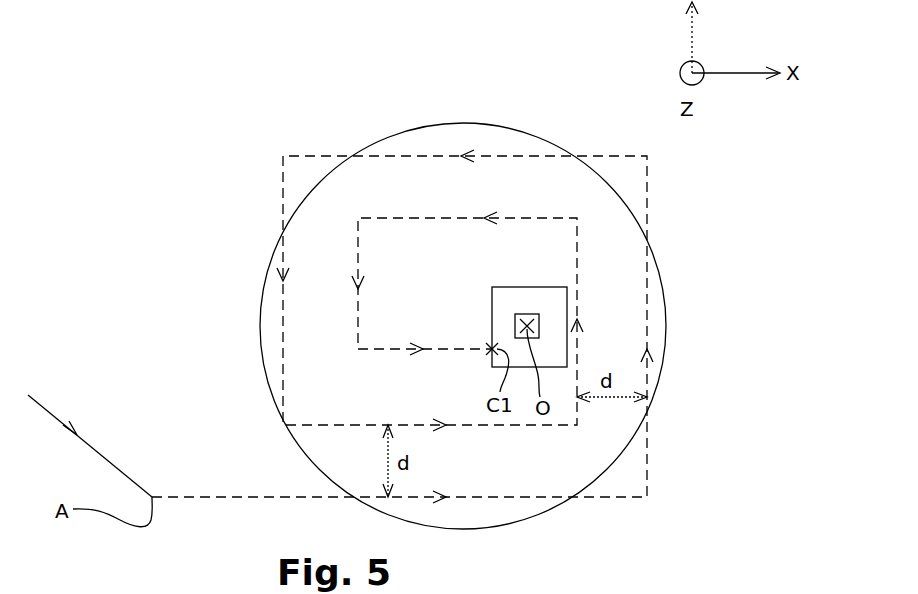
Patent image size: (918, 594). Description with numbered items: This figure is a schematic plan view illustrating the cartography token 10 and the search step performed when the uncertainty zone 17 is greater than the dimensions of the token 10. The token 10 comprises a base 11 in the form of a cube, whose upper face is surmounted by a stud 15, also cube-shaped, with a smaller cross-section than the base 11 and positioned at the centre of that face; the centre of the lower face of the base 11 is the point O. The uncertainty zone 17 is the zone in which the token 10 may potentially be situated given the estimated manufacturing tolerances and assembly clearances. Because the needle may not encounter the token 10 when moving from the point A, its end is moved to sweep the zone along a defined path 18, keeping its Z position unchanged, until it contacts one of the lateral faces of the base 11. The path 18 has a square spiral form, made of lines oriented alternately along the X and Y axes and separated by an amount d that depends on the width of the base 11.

The uncertainty zone 17 is at (485, 123).
The path 18 is at (647, 192).
The cartography token 10 is at (481, 308).
The base 11 is at (505, 303).
The stud 15 is at (533, 315).